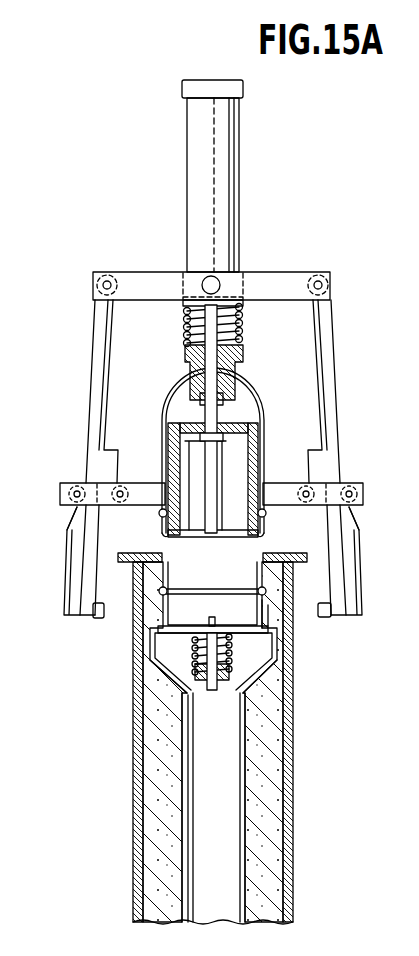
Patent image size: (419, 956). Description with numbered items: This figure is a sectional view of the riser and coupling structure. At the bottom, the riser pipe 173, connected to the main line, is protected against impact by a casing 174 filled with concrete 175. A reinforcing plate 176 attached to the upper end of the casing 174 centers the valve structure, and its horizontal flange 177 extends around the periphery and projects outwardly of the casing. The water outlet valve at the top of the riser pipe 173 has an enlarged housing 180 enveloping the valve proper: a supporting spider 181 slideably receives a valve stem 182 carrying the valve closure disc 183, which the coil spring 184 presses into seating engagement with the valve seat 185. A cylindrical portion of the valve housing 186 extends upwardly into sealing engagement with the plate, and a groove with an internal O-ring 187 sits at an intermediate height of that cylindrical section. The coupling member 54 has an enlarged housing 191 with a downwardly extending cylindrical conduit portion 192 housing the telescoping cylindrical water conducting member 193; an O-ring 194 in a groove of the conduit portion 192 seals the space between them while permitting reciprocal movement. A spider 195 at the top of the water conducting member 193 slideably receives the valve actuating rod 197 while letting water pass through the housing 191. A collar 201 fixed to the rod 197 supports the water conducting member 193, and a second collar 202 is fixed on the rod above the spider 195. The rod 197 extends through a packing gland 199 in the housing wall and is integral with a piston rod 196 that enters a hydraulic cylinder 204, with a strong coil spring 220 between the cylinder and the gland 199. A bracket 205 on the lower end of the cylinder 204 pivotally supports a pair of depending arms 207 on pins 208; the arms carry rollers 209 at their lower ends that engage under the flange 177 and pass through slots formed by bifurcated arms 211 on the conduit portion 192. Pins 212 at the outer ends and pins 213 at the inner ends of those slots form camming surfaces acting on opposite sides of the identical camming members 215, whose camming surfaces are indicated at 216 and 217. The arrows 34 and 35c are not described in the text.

The hydraulic cylinder 204 is at (240, 166).
The bracket 205 is at (248, 281).
The pins 208 is at (106, 282).
The depending arms 207 is at (97, 345).
The coupling member 54 is at (346, 412).
The packing gland 199 is at (243, 365).
The coil spring 220 is at (183, 320).
The piston rod 196 is at (246, 320).
The enlarged housing 191 is at (173, 389).
The second collar 202 is at (200, 400).
The cylindrical conduit portion 192 is at (168, 440).
The cylindrical water conducting member 193 is at (257, 452).
The valve actuating rod 197 is at (215, 528).
The spider 195 is at (222, 428).
The collar 201 is at (221, 442).
The O-ring 194 is at (160, 514).
The bifurcated arms 211 is at (62, 493).
The pins 212 is at (77, 488).
The pins 213 is at (121, 488).
The camming surfaces 217 is at (98, 530).
The camming members 215 is at (72, 570).
The camming surfaces 216 is at (74, 516).
The rollers 209 is at (92, 612).
The concrete 175 is at (152, 805).
The casing 174 is at (290, 822).
The reinforcing plate 176 is at (300, 546).
The horizontal flange 177 is at (133, 563).
The nozzle 34 is at (298, 778).
The cylindrical portion of the valve housing 186 is at (150, 640).
The groove and O-ring 187 is at (196, 592).
The valve closure disc 183 is at (238, 626).
The valve seat 185 is at (284, 622).
The enlarged housing 180 is at (165, 668).
The valve 35c is at (330, 670).
The coil spring 184 is at (232, 668).
The supporting spider 181 is at (216, 692).
The valve stem 182 is at (185, 702).
The riser pipe 173 is at (245, 886).